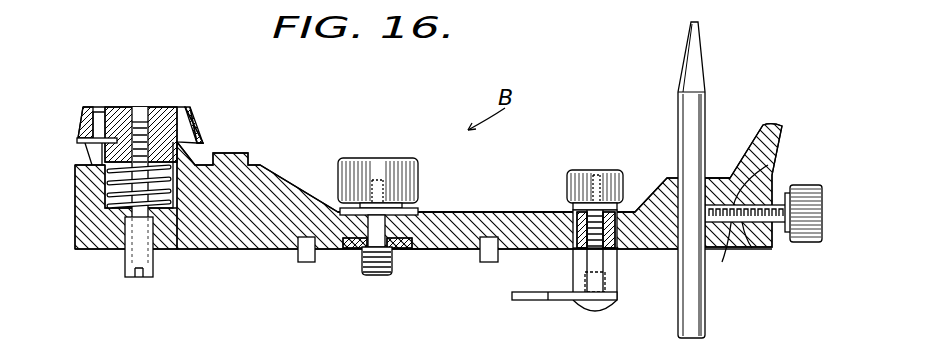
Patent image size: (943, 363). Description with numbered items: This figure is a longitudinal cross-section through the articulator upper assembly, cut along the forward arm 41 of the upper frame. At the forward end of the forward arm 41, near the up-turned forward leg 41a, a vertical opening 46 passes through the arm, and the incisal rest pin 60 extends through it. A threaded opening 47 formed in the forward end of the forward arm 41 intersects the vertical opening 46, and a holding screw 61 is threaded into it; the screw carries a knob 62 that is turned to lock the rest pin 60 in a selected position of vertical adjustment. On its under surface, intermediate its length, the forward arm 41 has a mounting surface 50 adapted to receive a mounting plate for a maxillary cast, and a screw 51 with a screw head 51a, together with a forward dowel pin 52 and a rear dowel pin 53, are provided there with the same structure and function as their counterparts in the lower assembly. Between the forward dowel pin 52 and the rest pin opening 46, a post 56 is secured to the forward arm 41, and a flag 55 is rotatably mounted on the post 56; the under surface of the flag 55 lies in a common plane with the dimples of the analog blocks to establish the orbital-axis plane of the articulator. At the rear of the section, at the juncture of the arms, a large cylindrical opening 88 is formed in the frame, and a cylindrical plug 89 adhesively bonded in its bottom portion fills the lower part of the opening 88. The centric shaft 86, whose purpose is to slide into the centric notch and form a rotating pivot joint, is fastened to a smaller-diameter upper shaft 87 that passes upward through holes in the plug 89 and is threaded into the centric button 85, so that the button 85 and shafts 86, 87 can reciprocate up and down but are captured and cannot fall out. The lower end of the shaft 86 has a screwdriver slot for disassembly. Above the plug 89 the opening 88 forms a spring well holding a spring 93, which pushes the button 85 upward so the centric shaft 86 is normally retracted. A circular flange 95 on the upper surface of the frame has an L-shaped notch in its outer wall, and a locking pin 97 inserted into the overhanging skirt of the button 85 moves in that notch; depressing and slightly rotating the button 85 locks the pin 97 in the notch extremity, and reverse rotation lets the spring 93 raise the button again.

The forward arm 41 is at (480, 212).
The forward leg 41a is at (766, 123).
The vertical opening 46 is at (715, 178).
The threaded opening 47 is at (745, 173).
The mounting surface 50 is at (428, 250).
The screw 51 is at (386, 228).
The screw head 51a is at (373, 150).
The forward dowel pin 52 is at (490, 263).
The rear dowel pin 53 is at (306, 263).
The flag 55 is at (531, 298).
The post 56 is at (618, 277).
The incisal rest pin 60 is at (678, 101).
The holding screw 61 is at (736, 251).
The knob 62 is at (822, 205).
The centric button 85 is at (116, 106).
The centric shaft 86 is at (126, 268).
The upper shaft 87 is at (141, 122).
The cylindrical opening 88 is at (164, 250).
The plug 89 is at (106, 233).
The spring 93 is at (110, 200).
The circular flange 95 is at (184, 137).
The locking pin 97 is at (84, 143).